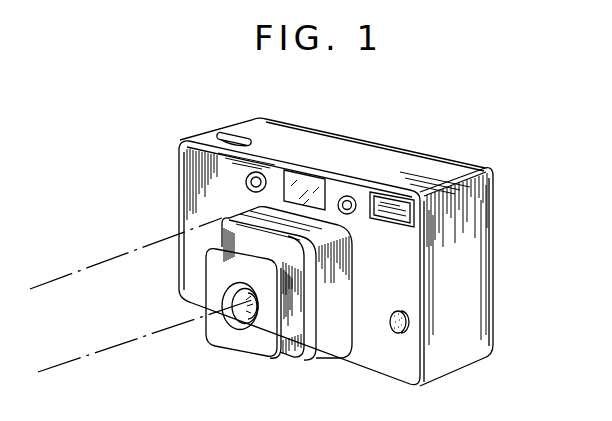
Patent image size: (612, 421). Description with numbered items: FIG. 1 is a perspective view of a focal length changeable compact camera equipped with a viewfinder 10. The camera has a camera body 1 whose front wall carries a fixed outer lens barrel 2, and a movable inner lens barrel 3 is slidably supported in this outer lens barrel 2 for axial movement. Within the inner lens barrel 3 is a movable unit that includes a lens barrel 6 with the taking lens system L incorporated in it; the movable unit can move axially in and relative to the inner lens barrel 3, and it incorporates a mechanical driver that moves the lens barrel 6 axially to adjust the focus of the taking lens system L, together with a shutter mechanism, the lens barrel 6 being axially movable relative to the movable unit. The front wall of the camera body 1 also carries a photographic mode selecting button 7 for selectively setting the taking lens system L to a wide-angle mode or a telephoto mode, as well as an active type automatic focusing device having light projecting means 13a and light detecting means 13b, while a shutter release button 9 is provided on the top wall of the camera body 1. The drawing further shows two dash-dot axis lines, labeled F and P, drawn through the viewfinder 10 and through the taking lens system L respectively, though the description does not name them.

The camera body 1 is at (373, 356).
The fixed outer lens barrel 2 is at (333, 338).
The movable inner lens barrel 3 is at (288, 338).
The lens barrel 6 is at (231, 314).
The photographic mode selecting button 7 is at (407, 323).
The shutter release button 9 is at (238, 136).
The viewfinder 10 is at (304, 172).
The light projecting means 13a is at (257, 173).
The light detecting means 13b is at (346, 195).
The taking lens system L is at (240, 329).
The finder optical axis F is at (59, 272).
The photographing optical axis P is at (78, 358).